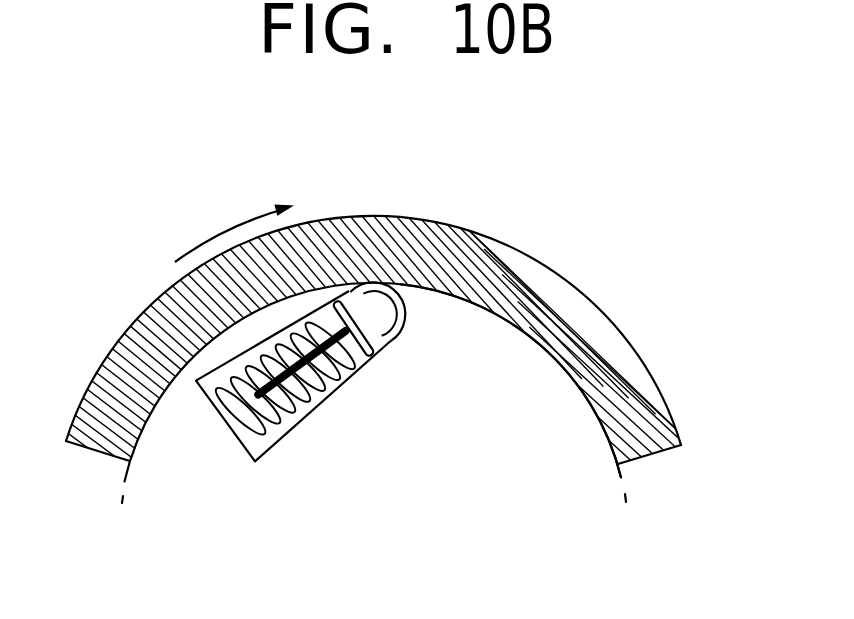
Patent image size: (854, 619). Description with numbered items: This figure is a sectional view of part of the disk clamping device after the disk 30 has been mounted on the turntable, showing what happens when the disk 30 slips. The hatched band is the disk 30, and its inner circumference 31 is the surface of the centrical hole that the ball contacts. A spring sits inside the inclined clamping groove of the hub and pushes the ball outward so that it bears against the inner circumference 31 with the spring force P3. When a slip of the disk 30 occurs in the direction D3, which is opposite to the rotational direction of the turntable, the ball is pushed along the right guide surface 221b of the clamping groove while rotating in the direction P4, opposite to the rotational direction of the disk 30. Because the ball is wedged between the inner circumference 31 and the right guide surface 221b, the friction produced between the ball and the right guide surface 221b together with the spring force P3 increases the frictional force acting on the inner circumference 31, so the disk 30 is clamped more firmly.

The disk 30 is at (157, 330).
The inner circumference 31 is at (563, 367).
The right guide surface 221b is at (396, 345).
The spring force P3 is at (316, 390).
The rotation direction of ball P4 is at (402, 312).
The slip direction D3 is at (233, 225).